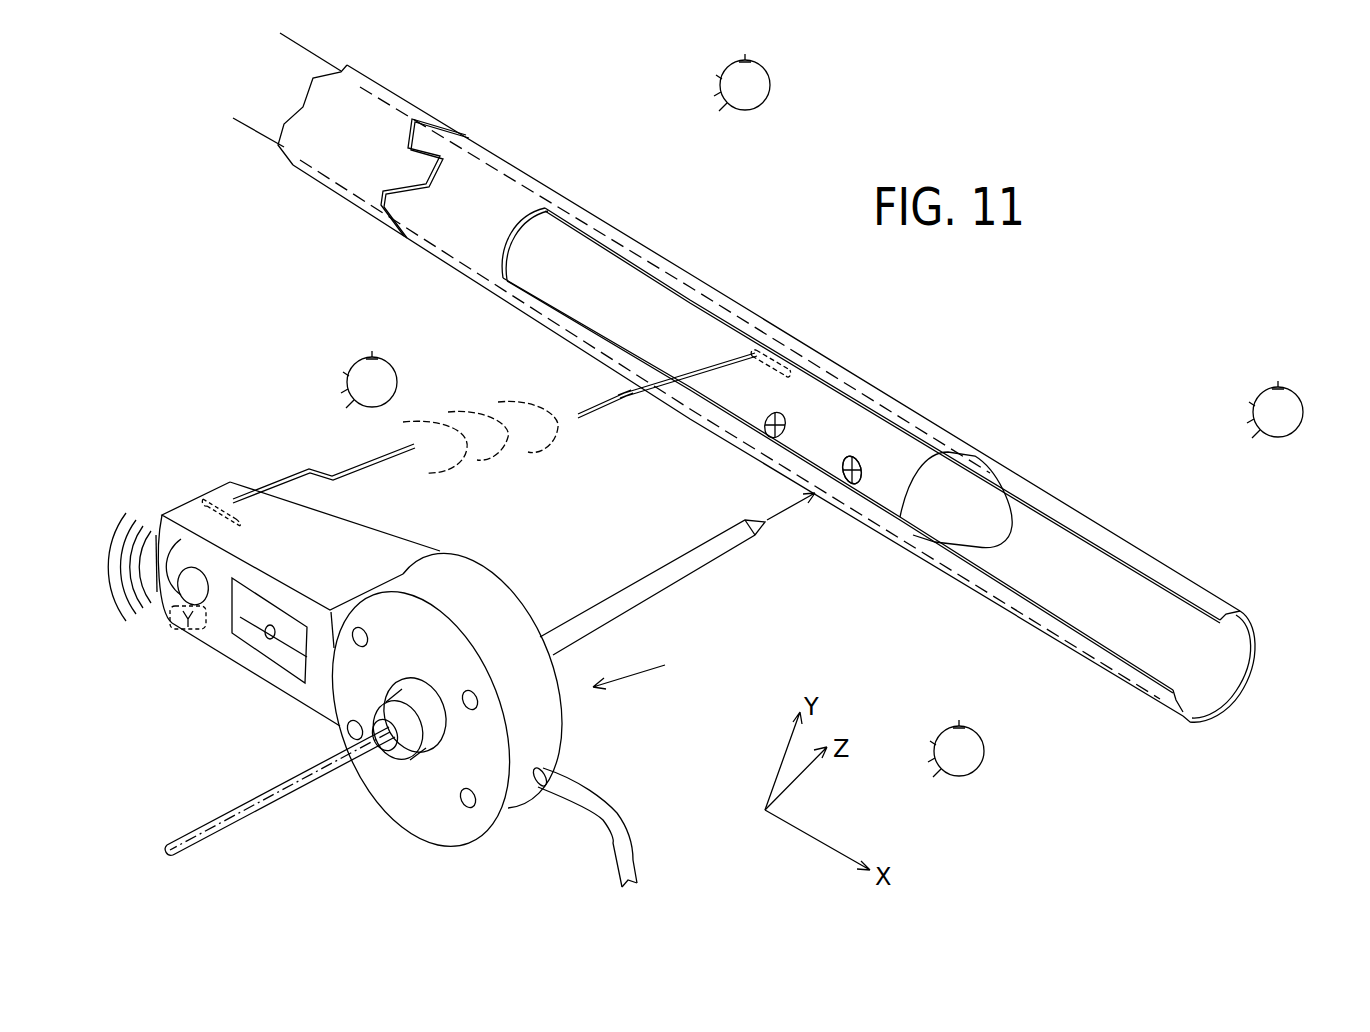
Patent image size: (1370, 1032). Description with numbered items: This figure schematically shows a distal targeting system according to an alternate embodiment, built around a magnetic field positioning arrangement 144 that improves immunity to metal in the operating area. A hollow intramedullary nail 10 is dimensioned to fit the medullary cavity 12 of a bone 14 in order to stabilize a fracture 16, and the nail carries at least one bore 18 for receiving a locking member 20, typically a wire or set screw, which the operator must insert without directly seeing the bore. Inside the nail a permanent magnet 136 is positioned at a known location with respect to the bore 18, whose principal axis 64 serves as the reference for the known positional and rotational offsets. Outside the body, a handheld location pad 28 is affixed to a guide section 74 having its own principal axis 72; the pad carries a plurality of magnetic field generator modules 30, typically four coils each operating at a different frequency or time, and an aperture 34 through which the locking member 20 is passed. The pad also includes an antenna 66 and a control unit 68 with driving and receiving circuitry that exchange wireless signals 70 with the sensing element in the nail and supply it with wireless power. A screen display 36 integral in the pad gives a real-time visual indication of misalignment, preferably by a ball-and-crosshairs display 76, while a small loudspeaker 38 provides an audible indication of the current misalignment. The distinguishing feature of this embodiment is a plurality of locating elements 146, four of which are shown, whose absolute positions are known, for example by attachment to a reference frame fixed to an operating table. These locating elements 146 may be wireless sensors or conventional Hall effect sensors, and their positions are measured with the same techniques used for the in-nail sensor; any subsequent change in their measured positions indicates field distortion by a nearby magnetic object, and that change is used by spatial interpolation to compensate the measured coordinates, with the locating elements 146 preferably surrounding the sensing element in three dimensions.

The intramedullary nail 10 is at (272, 130).
The medullary cavity 12 is at (1198, 623).
The bone 14 is at (1088, 648).
The fracture 16 is at (458, 130).
The bore 18 is at (770, 415).
The locking member 20 is at (623, 592).
The location pad 28 is at (470, 562).
The magnetic field generator modules 30 is at (366, 628).
The aperture 34 is at (390, 756).
The screen display 36 is at (240, 640).
The loudspeaker 38 is at (196, 578).
The principal axis 64 is at (851, 460).
The antenna 66 is at (240, 522).
The control unit 68 is at (180, 633).
The wireless signals 70 is at (694, 385).
The principal axis 72 is at (318, 766).
The guide section 74 is at (642, 669).
The ball-and-crosshairs display 76 is at (283, 628).
The permanent magnet 136 is at (778, 362).
The magnetic field positioning arrangement 144 is at (545, 848).
The locating elements 146 is at (762, 68).